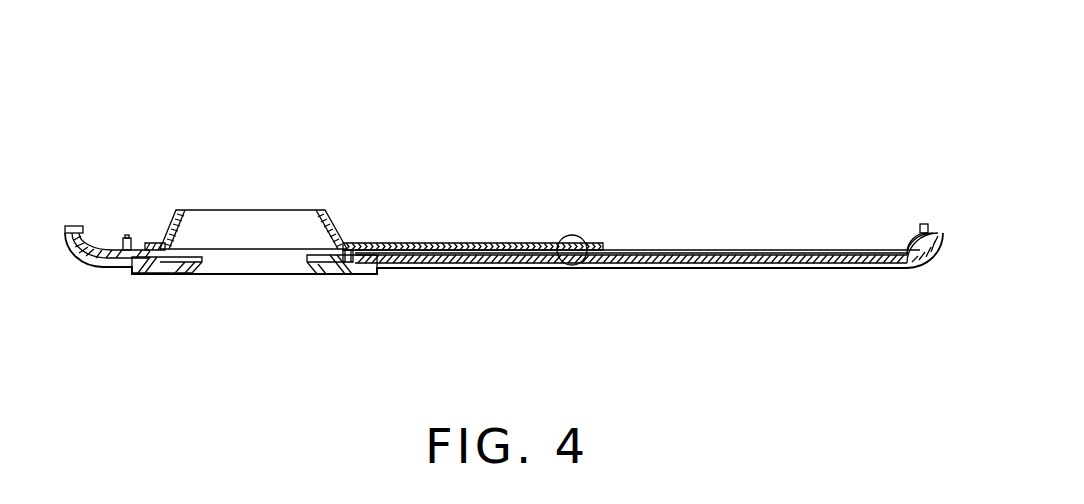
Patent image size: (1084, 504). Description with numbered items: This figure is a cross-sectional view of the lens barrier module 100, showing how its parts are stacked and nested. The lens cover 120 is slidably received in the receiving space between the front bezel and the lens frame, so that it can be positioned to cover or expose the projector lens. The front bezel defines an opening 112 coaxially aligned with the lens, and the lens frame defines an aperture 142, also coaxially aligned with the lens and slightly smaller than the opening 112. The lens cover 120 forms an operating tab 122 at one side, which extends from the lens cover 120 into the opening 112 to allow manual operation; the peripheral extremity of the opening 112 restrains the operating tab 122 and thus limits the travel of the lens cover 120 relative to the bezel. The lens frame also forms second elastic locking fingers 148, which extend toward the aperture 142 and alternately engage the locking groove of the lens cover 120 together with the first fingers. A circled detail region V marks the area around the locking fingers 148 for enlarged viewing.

The lens barrier module 100 is at (548, 38).
The opening 112 is at (243, 264).
The lens cover 120 is at (458, 247).
The operating tab 122 is at (351, 261).
The aperture 142 is at (247, 222).
The second elastic locking fingers 148 is at (379, 243).
The detail view region V is at (581, 238).